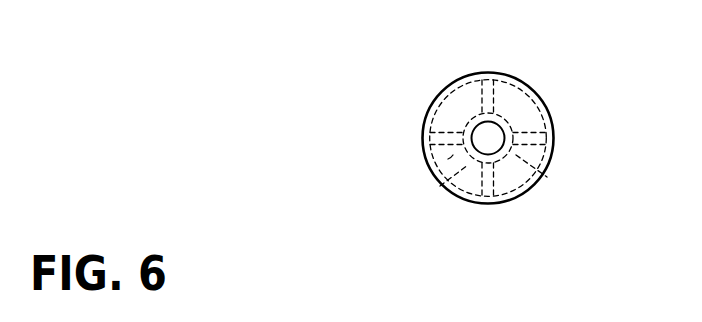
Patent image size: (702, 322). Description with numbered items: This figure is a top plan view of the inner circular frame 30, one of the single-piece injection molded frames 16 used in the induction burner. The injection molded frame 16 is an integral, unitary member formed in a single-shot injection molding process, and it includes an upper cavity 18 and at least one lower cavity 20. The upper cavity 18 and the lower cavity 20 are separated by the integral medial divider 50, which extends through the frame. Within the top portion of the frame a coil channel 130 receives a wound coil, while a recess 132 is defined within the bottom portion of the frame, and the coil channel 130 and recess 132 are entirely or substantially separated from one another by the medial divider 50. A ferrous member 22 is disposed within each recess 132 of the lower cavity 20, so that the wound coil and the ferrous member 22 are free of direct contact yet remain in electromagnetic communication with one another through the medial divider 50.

The injection molded frame 16 is at (415, 81).
The upper cavity 18 is at (507, 106).
The lower cavity 20 is at (434, 112).
The ferrous member 22 is at (547, 177).
The inner circular frame 30 is at (552, 92).
The integral medial divider 50 is at (510, 151).
The coil channel 130 is at (452, 156).
The recess 132 is at (440, 186).